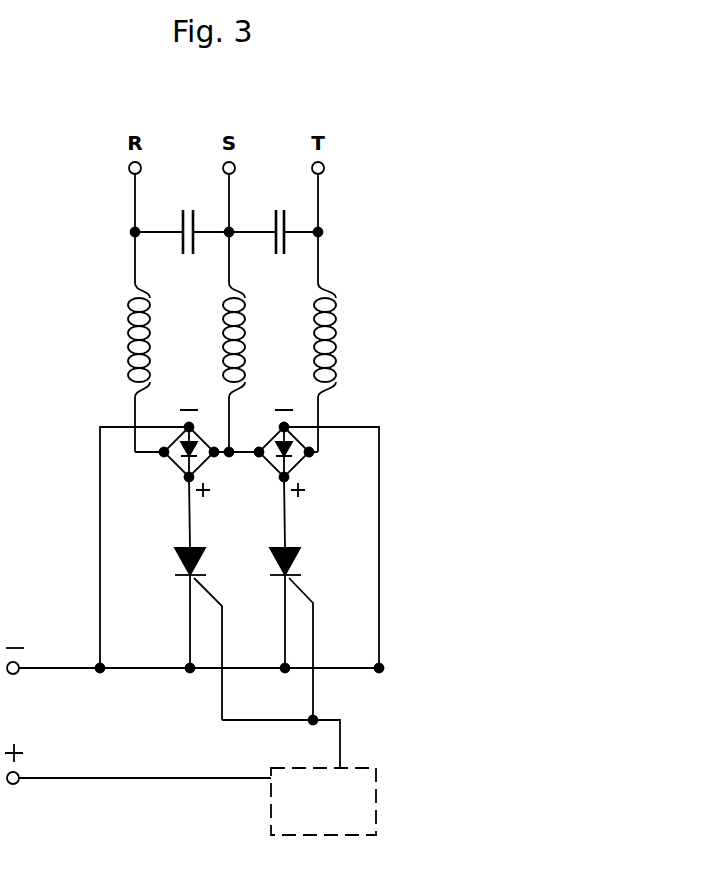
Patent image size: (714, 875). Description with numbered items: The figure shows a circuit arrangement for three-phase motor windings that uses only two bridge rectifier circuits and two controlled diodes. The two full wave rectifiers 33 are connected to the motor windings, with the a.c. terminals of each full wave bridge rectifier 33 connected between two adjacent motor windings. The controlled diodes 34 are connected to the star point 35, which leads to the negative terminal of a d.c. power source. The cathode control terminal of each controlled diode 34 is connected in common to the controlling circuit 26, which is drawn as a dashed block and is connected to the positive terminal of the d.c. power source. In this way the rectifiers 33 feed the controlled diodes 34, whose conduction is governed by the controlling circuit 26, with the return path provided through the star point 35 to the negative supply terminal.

The full wave rectifiers 33 is at (207, 462).
The controlled diodes 34 is at (206, 558).
The star point 35 is at (353, 667).
The controlling circuit 26 is at (264, 808).